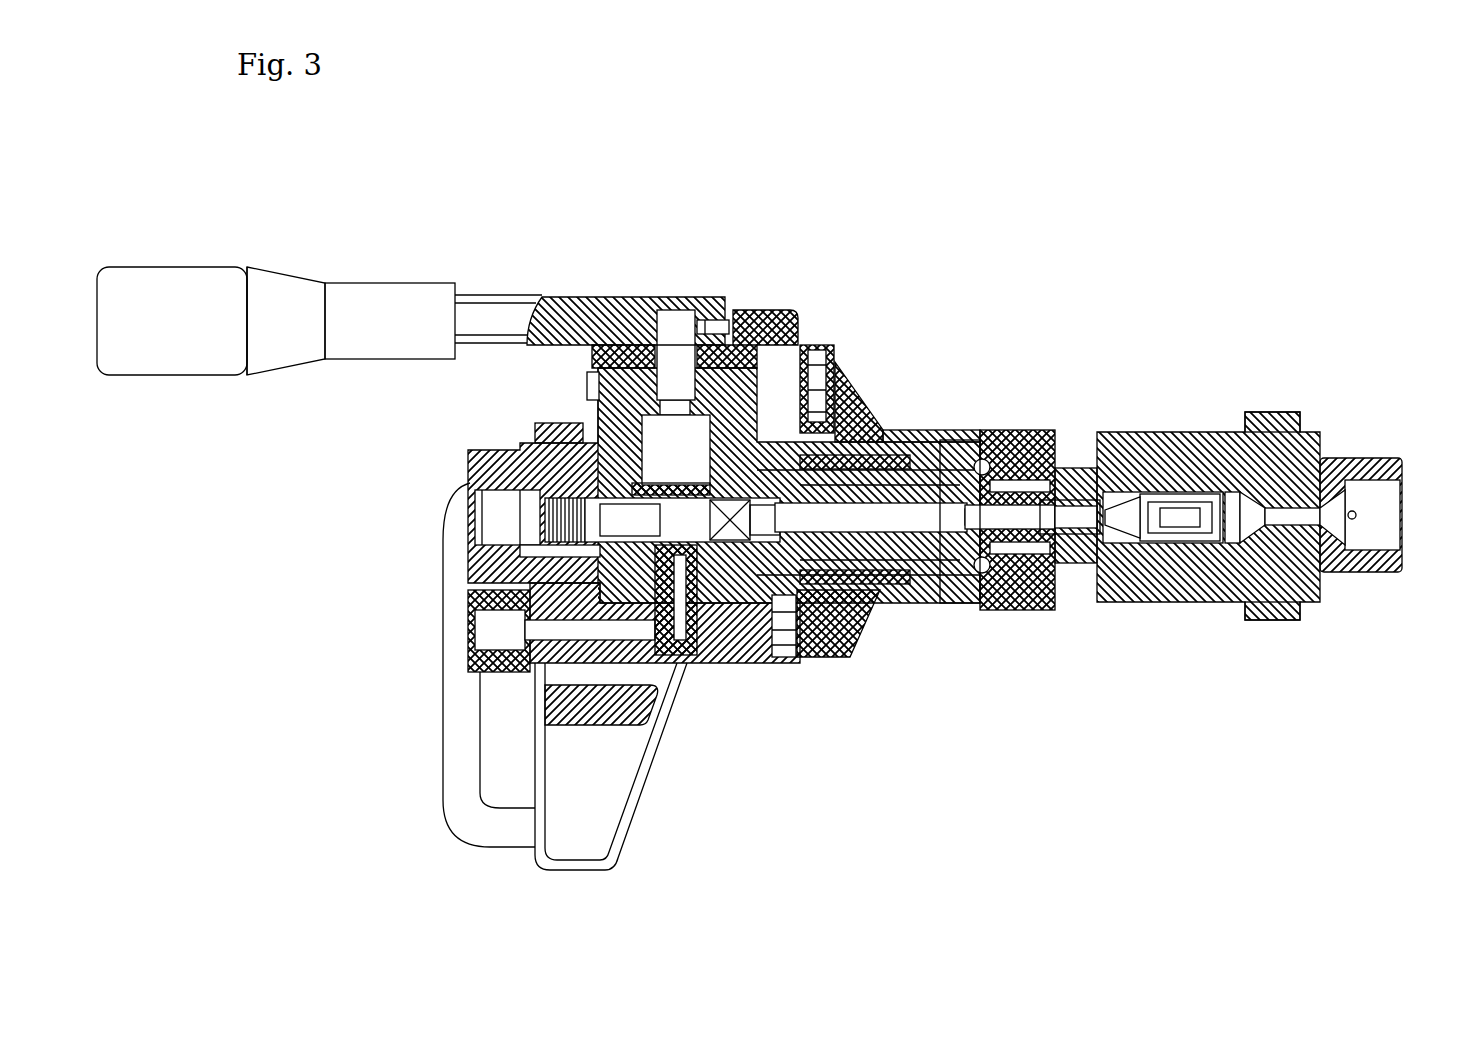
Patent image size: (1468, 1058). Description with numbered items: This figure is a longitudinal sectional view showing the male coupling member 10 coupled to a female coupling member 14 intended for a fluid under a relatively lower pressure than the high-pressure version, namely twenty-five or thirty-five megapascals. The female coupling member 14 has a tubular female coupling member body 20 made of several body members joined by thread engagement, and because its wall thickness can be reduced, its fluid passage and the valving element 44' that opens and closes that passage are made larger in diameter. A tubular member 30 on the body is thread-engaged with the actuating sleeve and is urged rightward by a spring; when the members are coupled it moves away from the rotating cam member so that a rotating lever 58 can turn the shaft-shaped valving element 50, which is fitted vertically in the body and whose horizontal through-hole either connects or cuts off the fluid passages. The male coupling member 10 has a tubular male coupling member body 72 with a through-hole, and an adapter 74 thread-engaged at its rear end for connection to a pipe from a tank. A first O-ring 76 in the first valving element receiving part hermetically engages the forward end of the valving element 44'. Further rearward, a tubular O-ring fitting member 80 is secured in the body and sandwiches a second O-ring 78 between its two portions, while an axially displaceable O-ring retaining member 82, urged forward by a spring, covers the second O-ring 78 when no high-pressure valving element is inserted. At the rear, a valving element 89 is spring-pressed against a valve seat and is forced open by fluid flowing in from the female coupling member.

The male coupling member 10 is at (1158, 314).
The female coupling member 14 is at (782, 216).
The female coupling member body 20 is at (775, 416).
The tubular member 30 is at (866, 397).
The valving element 44' is at (905, 465).
The shaft-shaped valving element 50 is at (665, 298).
The rotating lever 58 is at (405, 282).
The male coupling member body 72 is at (1267, 415).
The adapter 74 is at (1345, 458).
The first O-ring 76 is at (960, 590).
The second O-ring 78 is at (1030, 600).
The O-ring fitting member 80 is at (1028, 498).
The O-ring retaining member 82 is at (1058, 532).
The valving element 89 is at (1148, 518).